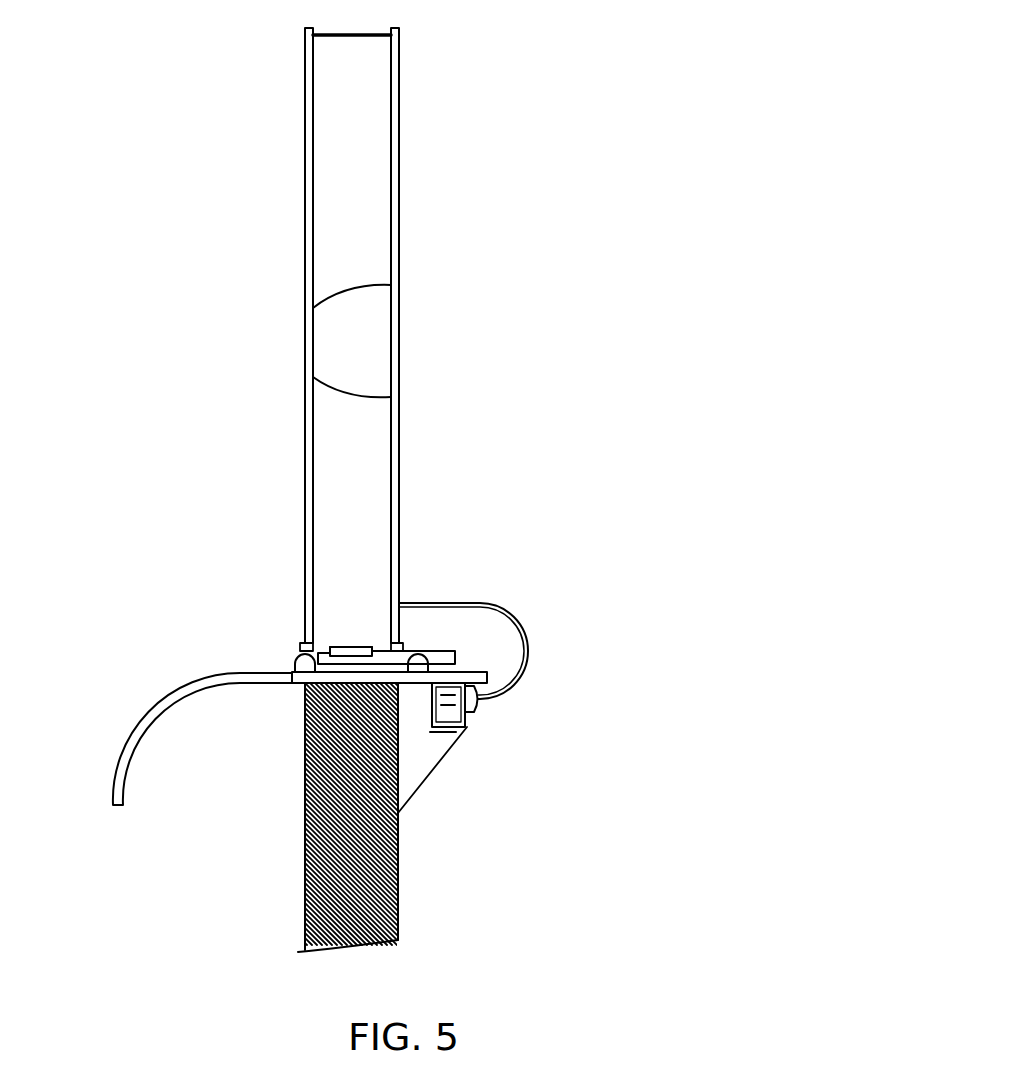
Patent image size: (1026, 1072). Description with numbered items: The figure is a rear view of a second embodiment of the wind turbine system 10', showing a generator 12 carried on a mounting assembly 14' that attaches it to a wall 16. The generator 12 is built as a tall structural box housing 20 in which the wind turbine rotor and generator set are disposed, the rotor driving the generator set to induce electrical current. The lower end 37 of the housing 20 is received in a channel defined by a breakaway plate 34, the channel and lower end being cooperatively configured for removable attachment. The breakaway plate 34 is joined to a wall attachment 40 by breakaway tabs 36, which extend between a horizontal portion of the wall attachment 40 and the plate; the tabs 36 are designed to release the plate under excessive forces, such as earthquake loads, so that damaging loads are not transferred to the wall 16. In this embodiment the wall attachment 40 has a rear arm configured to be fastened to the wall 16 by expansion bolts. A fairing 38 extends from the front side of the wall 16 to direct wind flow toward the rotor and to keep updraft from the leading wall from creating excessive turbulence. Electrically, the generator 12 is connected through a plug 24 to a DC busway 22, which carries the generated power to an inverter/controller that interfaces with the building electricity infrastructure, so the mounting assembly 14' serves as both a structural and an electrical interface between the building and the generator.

The wind turbine system 10' is at (477, 483).
The generator 12 is at (462, 174).
The box housing 20 is at (400, 427).
The lower end 37 is at (352, 642).
The breakaway tabs 36 is at (295, 658).
The fairing 38 is at (140, 717).
The breakaway plate 34 is at (455, 650).
The plug 24 is at (492, 678).
The mounting assembly 14' is at (477, 668).
The DC busway 22 is at (467, 727).
The wall attachment 40 is at (432, 772).
The wall 16 is at (305, 865).